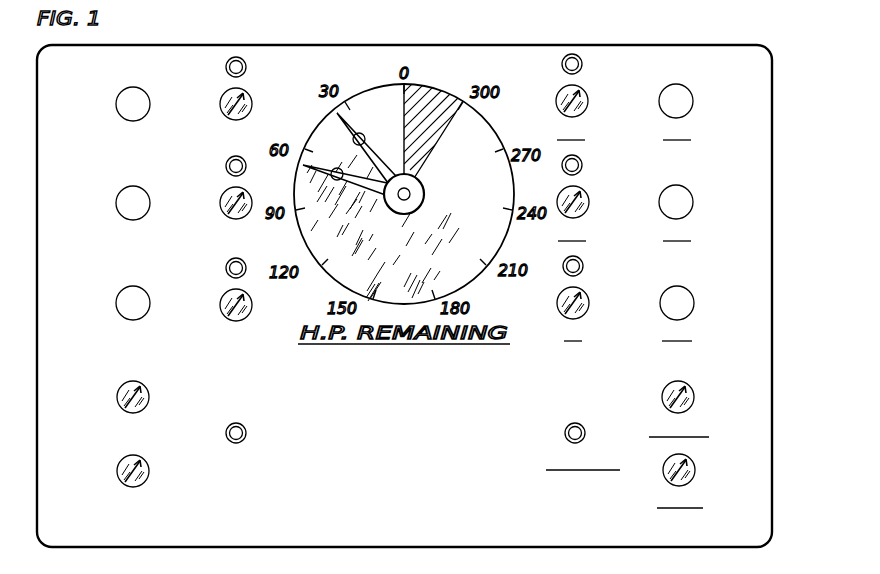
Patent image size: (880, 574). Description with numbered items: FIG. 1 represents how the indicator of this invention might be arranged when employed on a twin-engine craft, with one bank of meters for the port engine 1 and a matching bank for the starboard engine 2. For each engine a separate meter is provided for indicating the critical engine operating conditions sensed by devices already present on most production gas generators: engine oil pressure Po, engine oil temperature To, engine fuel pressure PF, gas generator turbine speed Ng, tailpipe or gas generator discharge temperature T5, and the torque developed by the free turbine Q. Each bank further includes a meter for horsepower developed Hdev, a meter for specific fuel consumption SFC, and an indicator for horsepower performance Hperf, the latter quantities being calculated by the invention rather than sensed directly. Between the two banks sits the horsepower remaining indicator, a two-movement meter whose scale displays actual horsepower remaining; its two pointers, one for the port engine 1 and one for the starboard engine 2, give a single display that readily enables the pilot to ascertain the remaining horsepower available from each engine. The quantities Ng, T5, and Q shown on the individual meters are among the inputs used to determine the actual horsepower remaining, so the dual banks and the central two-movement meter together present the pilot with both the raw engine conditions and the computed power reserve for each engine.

The port engine 1 is at (292, 535).
The starboard engine 2 is at (752, 533).
The engine oil pressure meter Po is at (148, 142).
The engine oil temperature meter To is at (148, 242).
The engine fuel pressure meter PF is at (148, 341).
The horsepower developed meter Hdev is at (164, 437).
The specific fuel consumption meter SFC is at (158, 509).
The gas generator turbine speed meter Ng is at (250, 142).
The tailpipe temperature meter T5 is at (250, 242).
The torque meter Q is at (245, 341).
The horsepower performance indicator Hperf is at (282, 470).